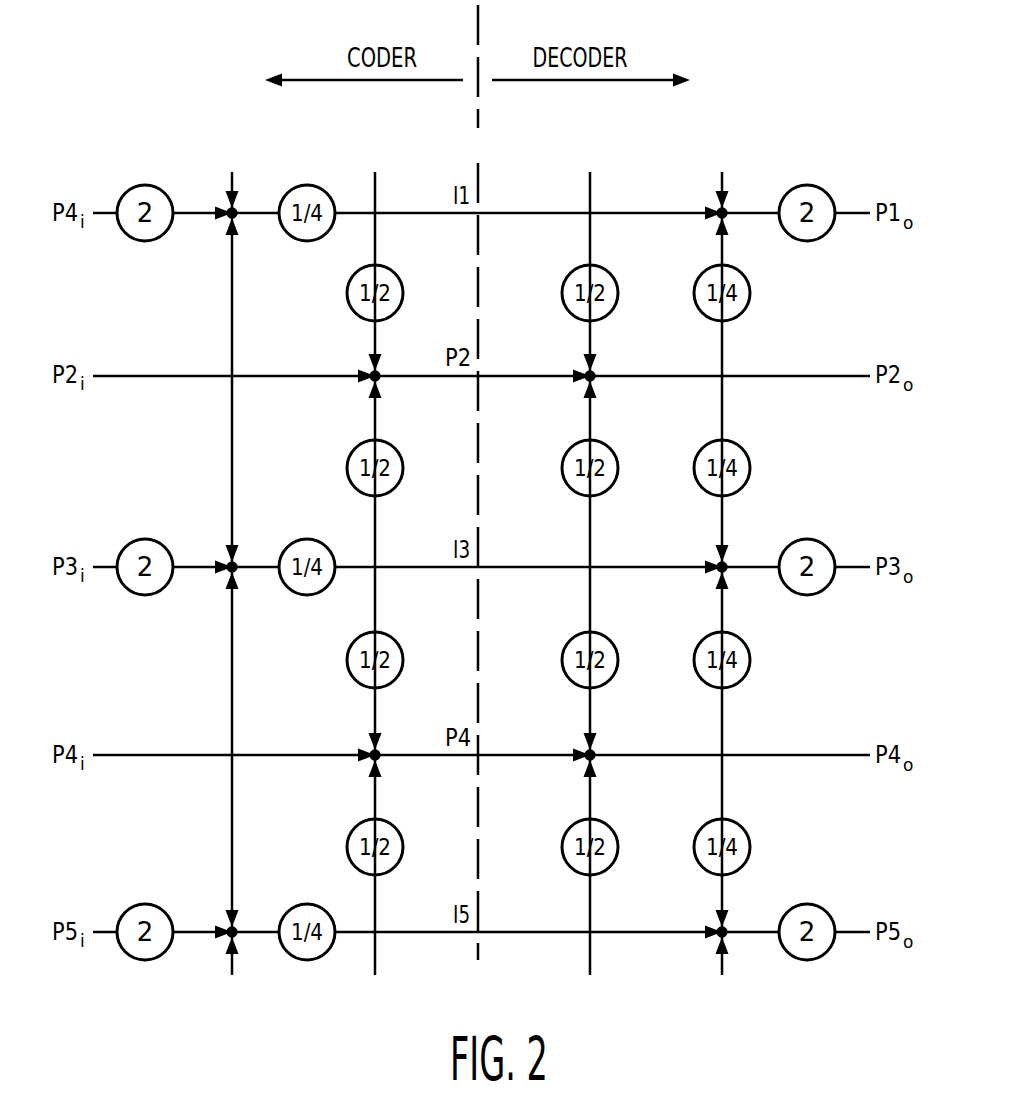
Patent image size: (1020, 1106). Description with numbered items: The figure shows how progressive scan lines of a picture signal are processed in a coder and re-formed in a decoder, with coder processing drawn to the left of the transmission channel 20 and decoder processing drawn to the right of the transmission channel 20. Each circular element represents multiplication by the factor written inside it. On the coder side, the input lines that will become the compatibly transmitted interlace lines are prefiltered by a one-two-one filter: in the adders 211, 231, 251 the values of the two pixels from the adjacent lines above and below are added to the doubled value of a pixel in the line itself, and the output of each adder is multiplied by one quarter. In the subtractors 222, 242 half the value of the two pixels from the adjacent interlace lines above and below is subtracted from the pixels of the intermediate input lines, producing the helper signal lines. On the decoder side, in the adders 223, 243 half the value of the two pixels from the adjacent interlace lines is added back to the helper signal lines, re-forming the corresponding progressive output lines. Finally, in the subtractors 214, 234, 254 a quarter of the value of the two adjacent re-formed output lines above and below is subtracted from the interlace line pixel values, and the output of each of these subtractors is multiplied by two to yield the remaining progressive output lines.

The transmission channel 20 is at (478, 482).
The adder 211 is at (236, 232).
The subtractor 214 is at (734, 228).
The subtractor 222 is at (380, 393).
The adder 223 is at (596, 393).
The adder 231 is at (236, 586).
The subtractor 234 is at (730, 586).
The subtractor 242 is at (381, 771).
The adder 243 is at (597, 771).
The adder 251 is at (241, 949).
The subtractor 254 is at (733, 947).